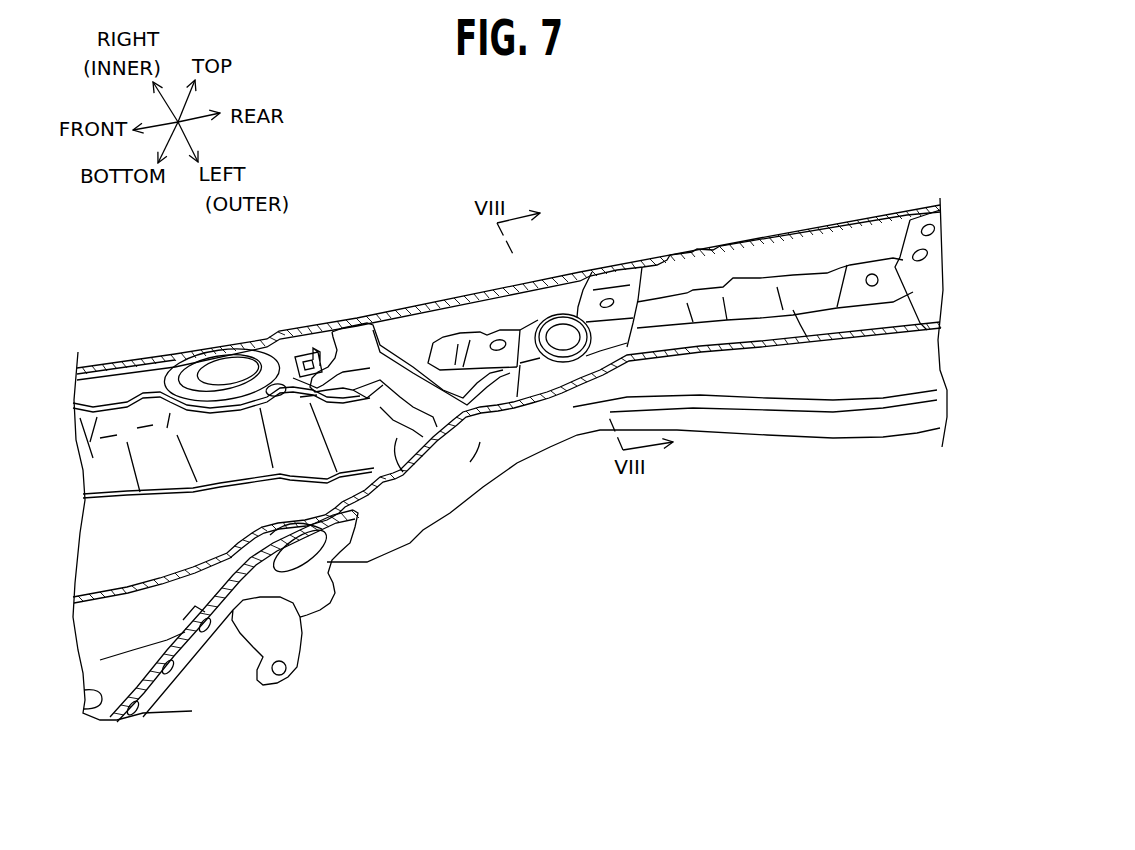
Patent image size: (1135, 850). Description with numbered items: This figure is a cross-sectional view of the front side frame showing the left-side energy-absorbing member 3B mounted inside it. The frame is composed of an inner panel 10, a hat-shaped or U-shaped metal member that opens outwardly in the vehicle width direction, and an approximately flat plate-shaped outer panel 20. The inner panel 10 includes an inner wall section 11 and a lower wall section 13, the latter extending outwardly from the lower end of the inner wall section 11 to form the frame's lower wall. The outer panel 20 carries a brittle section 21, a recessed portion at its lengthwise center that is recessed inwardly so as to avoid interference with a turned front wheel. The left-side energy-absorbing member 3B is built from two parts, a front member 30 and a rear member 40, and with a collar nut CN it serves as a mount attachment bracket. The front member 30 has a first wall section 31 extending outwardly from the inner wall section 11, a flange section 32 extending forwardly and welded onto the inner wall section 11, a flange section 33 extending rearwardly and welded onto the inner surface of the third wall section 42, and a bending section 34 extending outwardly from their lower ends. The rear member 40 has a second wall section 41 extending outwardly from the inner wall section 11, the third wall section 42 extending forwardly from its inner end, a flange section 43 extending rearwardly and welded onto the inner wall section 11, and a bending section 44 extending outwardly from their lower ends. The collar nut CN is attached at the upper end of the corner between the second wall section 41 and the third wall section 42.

The inner panel 10 is at (107, 328).
The inner wall section 11 is at (138, 387).
The lower wall section 13 is at (130, 547).
The outer panel 20 is at (413, 505).
The brittle section 21 is at (480, 450).
The left-side energy-absorbing member 3B is at (652, 111).
The front member 30 is at (401, 307).
The first wall section 31 is at (393, 372).
The flange section 32 is at (353, 347).
The flange section 33 is at (471, 303).
The bending section 34 is at (413, 417).
The rear member 40 is at (730, 325).
The second wall section 41 is at (576, 352).
The third wall section 42 is at (545, 320).
The flange section 43 is at (620, 330).
The bending section 44 is at (650, 340).
The collar nut CN is at (572, 322).